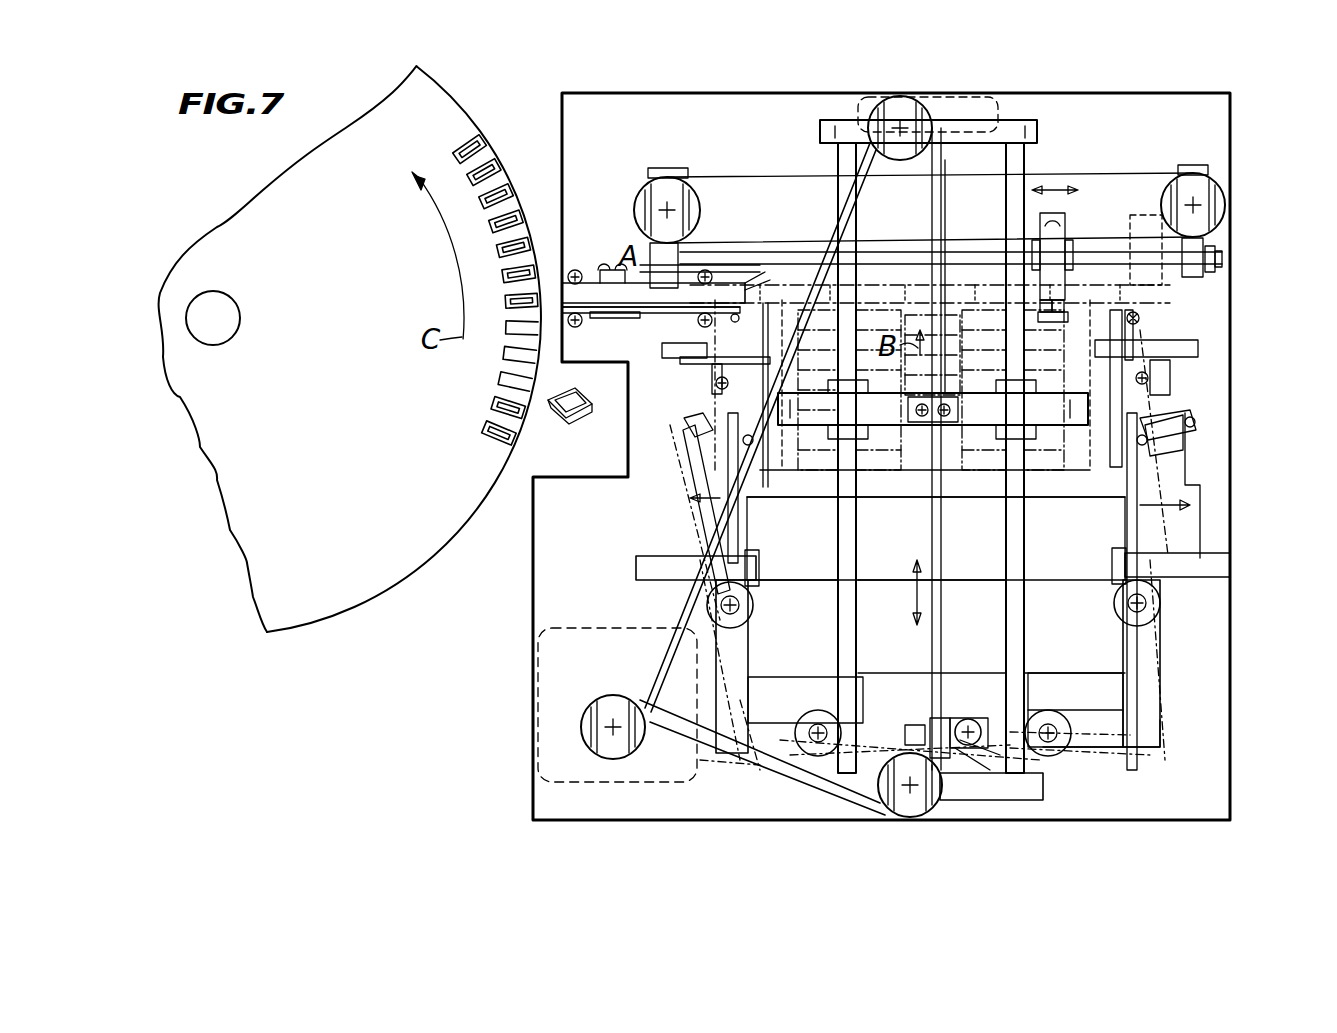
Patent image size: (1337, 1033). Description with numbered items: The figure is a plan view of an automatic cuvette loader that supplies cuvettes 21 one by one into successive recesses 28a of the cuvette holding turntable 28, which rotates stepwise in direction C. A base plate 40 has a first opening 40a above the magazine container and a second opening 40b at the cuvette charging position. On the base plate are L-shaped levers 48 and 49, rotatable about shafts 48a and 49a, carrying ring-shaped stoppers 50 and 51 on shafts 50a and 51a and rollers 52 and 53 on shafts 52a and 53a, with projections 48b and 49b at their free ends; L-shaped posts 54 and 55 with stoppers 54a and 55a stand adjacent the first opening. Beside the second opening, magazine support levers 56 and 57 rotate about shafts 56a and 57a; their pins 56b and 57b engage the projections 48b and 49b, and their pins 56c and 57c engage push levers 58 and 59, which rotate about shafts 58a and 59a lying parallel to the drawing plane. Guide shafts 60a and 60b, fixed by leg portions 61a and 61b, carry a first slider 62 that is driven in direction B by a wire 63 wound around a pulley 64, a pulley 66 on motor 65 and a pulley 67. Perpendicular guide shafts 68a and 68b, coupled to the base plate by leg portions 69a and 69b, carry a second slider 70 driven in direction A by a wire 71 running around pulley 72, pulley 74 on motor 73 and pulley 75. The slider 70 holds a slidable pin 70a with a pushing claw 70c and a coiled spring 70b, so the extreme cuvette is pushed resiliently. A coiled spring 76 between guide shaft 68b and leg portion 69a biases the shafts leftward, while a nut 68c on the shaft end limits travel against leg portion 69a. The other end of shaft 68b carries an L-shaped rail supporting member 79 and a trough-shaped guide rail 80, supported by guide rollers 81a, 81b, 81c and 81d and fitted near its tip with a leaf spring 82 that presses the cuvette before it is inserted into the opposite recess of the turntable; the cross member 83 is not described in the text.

The cuvette 21 is at (575, 418).
The cuvette holding turntable 28 is at (357, 349).
The recess 28a is at (506, 440).
The base plate 40 is at (655, 820).
The first opening 40a is at (1125, 673).
The second opening 40b is at (1006, 560).
The L-shaped lever 48 is at (1160, 722).
The shaft 48a is at (968, 718).
The projection 48b is at (1175, 435).
The L-shaped lever 49 is at (738, 770).
The shaft 49a is at (945, 722).
The projection 49b is at (705, 470).
The ring-shaped stopper 50 is at (1160, 618).
The shaft 50a is at (1160, 603).
The ring-shaped stopper 51 is at (708, 598).
The shaft 51a is at (707, 605).
The roller 52 is at (1072, 745).
The shaft 52a is at (1052, 756).
The roller 53 is at (800, 755).
The shaft 53a is at (822, 756).
The L-shaped post 54 is at (1215, 556).
The stopper 54a is at (1112, 565).
The L-shaped post 55 is at (638, 558).
The stopper 55a is at (758, 565).
The magazine support lever 56 is at (1110, 440).
The shaft 56a is at (1140, 318).
The pin 56b is at (1180, 450).
The pin 56c is at (1152, 412).
The magazine support lever 57 is at (770, 440).
The shaft 57a is at (752, 320).
The pin 57b is at (688, 498).
The pin 57c is at (692, 432).
The push lever 58 is at (1198, 348).
The shaft 58a is at (1170, 372).
The push lever 59 is at (738, 360).
The shaft 59a is at (712, 378).
The guide shaft 60a is at (1123, 582).
The guide shaft 60b is at (750, 580).
The leg portion 61a is at (996, 800).
The leg portion 61b is at (938, 118).
The first slider 62 is at (858, 470).
The wire 63 is at (1006, 470).
The pulley 64 is at (912, 817).
The motor 65 is at (581, 727).
The pulley 66 is at (545, 745).
The pulley 67 is at (900, 98).
The guide shaft 68a is at (760, 176).
The guide shaft 68b is at (688, 200).
The nut 68c is at (1215, 254).
The leg portion 69a is at (1215, 262).
The leg portion 69b is at (655, 250).
The second slider 70 is at (1052, 240).
The pin 70a is at (1040, 290).
The coiled spring 70b is at (1056, 300).
The pushing claw 70c is at (1048, 295).
The wire 71 is at (822, 132).
The pulley 72 is at (1225, 207).
The motor 73 is at (992, 100).
The pulley 74 is at (945, 160).
The pulley 75 is at (665, 177).
The coiled spring 76 is at (1203, 273).
The L-shaped rail supporting member 79 is at (580, 282).
The guide rail 80 is at (576, 270).
The guide roller 81a is at (562, 280).
The guide roller 81b is at (575, 328).
The guide roller 81c is at (698, 319).
The guide roller 81d is at (720, 282).
The leaf spring 82 is at (600, 318).
The cross bar 83 is at (792, 396).